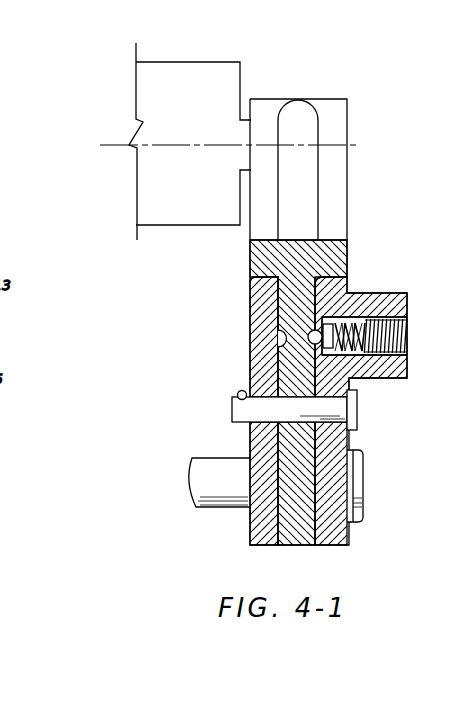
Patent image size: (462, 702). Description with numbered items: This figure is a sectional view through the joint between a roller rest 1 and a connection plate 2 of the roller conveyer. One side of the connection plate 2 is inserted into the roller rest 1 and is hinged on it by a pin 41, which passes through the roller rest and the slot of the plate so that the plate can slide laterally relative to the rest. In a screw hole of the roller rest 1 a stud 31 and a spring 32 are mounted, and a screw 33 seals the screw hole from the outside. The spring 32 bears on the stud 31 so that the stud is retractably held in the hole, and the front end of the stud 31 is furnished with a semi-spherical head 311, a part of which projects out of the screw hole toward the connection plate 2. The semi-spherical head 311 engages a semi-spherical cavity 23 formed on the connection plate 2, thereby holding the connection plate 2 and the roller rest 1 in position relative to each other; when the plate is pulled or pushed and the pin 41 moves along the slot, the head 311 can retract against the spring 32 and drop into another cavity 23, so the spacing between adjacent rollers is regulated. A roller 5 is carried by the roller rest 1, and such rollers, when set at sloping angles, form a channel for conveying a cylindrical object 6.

The roller rest 1 is at (337, 113).
The connection plate 2 is at (293, 537).
The roller 5 is at (207, 63).
The cylindrical object 6 is at (197, 503).
The semi-spherical cavity 23 is at (280, 333).
The stud 31 is at (343, 318).
The spring 32 is at (375, 307).
The screw 33 is at (410, 318).
The pin 41 is at (232, 406).
The semi-spherical head 311 is at (312, 336).